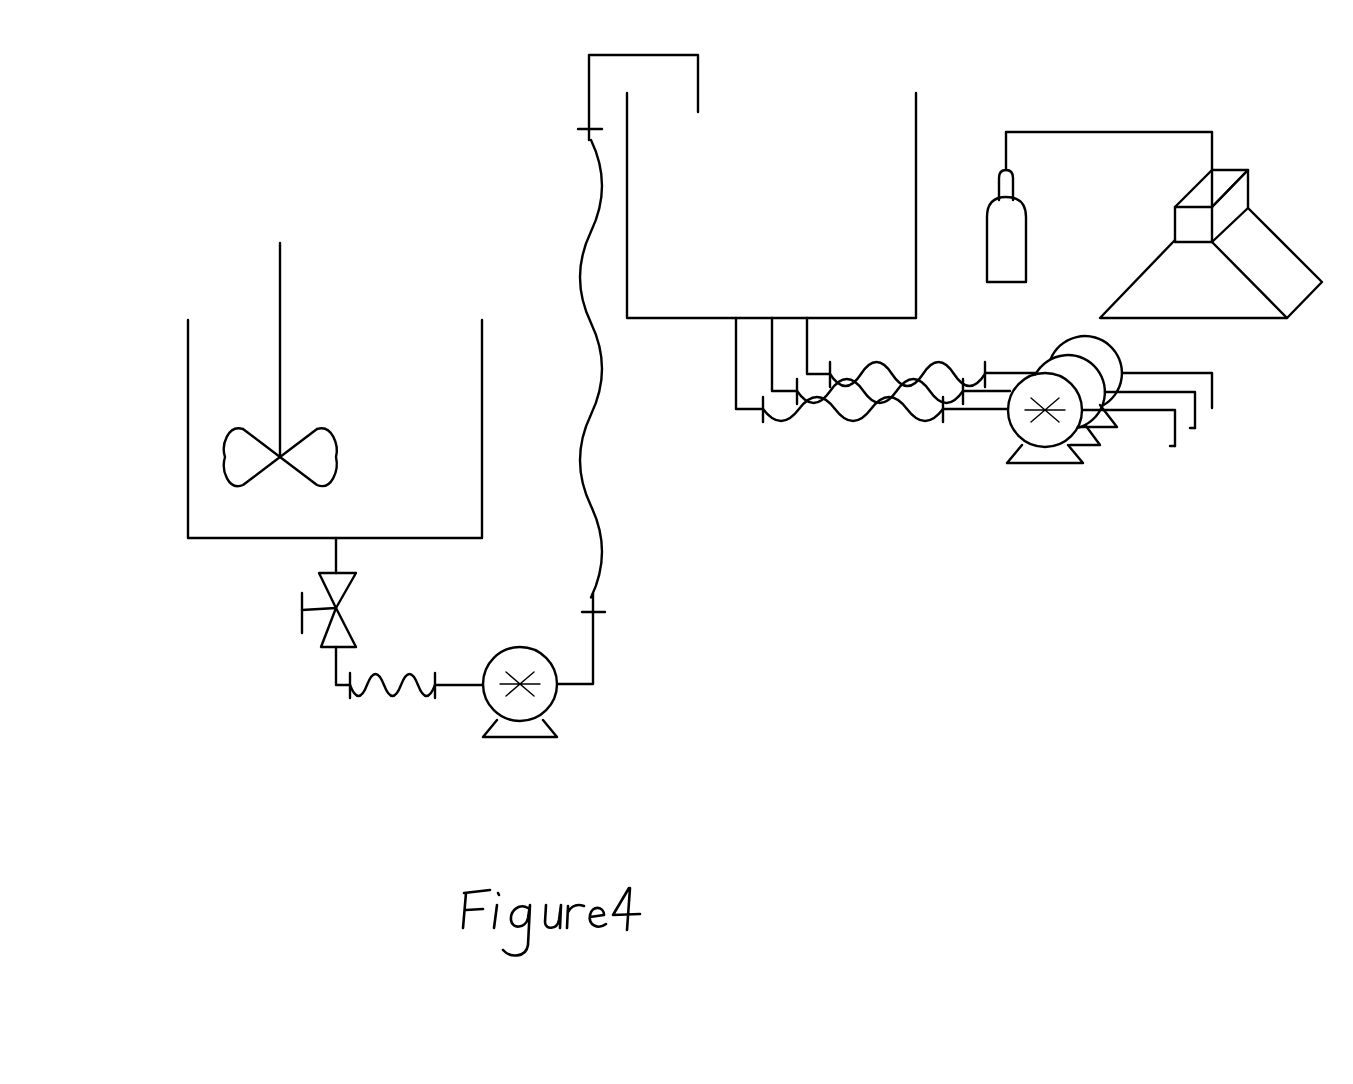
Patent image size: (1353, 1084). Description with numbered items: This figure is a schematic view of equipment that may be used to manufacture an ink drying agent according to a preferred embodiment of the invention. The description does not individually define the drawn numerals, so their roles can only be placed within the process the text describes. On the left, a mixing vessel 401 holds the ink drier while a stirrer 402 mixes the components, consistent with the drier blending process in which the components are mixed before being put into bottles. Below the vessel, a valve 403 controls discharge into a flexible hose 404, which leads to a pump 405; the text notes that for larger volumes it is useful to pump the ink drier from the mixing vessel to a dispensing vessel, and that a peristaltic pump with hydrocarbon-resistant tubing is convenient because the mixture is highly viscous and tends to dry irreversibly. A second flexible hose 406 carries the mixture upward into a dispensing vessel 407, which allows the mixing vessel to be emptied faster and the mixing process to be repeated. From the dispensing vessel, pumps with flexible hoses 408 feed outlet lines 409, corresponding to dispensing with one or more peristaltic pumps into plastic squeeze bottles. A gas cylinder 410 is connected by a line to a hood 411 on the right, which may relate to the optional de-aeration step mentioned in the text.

The mixing tank 401 is at (188, 375).
The stirrer 402 is at (280, 262).
The valve 403 is at (302, 633).
The flexible hose 404 is at (394, 703).
The pump 405 is at (558, 740).
The flexible hose 406 is at (610, 573).
The tank 407 is at (916, 133).
The pumps with flexible hoses 408 is at (1030, 465).
The outlet lines 409 is at (1167, 428).
The gas cylinder 410 is at (1027, 243).
The hood 411 is at (1287, 245).